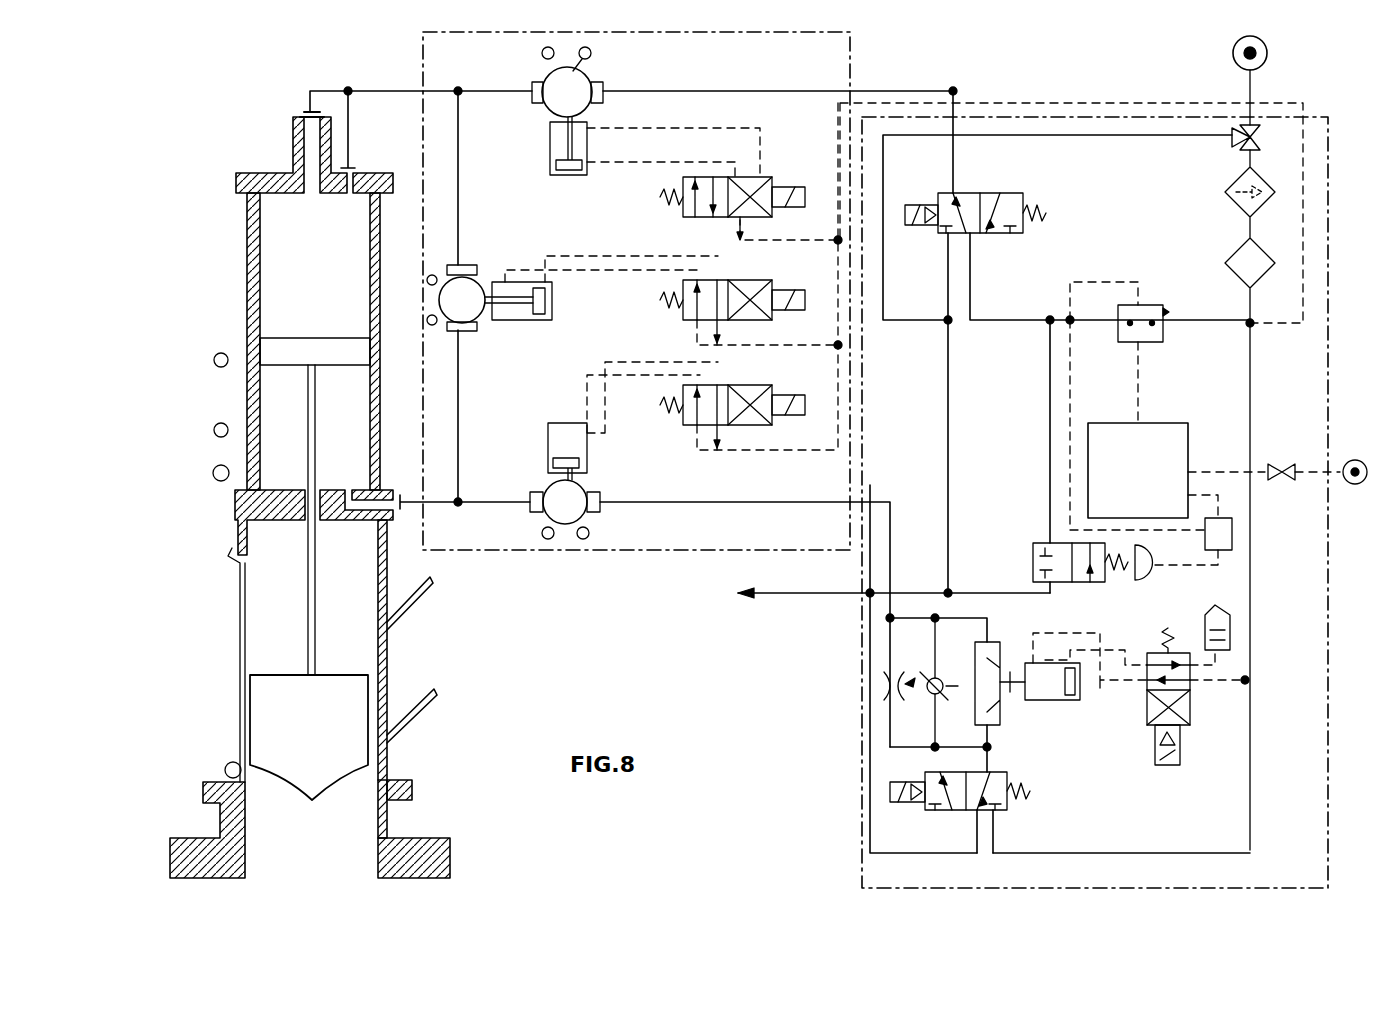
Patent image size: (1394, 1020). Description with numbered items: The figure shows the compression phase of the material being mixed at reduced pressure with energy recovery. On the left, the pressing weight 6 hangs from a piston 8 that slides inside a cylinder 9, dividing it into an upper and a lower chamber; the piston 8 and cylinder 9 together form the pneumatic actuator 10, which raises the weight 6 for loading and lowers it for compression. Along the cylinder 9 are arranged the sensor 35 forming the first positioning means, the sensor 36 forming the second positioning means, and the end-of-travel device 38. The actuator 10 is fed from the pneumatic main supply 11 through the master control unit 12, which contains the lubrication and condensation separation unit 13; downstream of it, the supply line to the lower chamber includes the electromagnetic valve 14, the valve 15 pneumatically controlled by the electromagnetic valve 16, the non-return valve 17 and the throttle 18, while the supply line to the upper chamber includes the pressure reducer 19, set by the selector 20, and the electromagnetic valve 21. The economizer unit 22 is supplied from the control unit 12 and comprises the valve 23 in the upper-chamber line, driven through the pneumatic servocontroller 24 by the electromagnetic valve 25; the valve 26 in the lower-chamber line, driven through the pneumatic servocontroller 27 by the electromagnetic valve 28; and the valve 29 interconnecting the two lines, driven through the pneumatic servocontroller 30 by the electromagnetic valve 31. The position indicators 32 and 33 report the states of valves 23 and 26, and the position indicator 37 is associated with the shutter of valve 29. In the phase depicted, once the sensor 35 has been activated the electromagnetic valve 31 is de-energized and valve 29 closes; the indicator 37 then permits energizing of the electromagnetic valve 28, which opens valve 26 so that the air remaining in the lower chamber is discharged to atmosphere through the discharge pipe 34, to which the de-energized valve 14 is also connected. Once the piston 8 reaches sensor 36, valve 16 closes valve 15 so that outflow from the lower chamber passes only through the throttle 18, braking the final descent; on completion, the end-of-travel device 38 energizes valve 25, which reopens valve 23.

The pressing weight 6 is at (318, 734).
The piston 8 is at (298, 352).
The cylinder 9 is at (378, 270).
The pneumatic actuator 10 is at (228, 262).
The pneumatic main supply 11 is at (1268, 53).
The master control unit 12 is at (1328, 260).
The lubrication and condensation separation unit 13 is at (1232, 232).
The electromagnetic valve 14 is at (1010, 805).
The valve 15 is at (1003, 700).
The electromagnetic valve 16 is at (1192, 712).
The non-return valve 17 is at (940, 672).
The throttle 18 is at (900, 688).
The pressure reducer 19 is at (1148, 345).
The selector 20 is at (1146, 477).
The electromagnetic valve 21 is at (985, 213).
The economizer unit 22 is at (648, 552).
The valve 23 is at (548, 108).
The pneumatic servocontroller 24 is at (548, 150).
The electromagnetic valve 25 is at (755, 180).
The valve 26 is at (545, 514).
The pneumatic servocontroller 27 is at (548, 444).
The electromagnetic valve 28 is at (745, 388).
The valve 29 is at (484, 322).
The pneumatic servocontroller 30 is at (525, 320).
The electromagnetic valve 31 is at (745, 283).
The position indicator 32 is at (591, 55).
The position indicator 33 is at (546, 540).
The discharge pipe 34 is at (800, 598).
The sensor 35 is at (214, 356).
The sensor 36 is at (214, 428).
The position indicator 37 is at (428, 278).
The end-of-travel device 38 is at (213, 470).